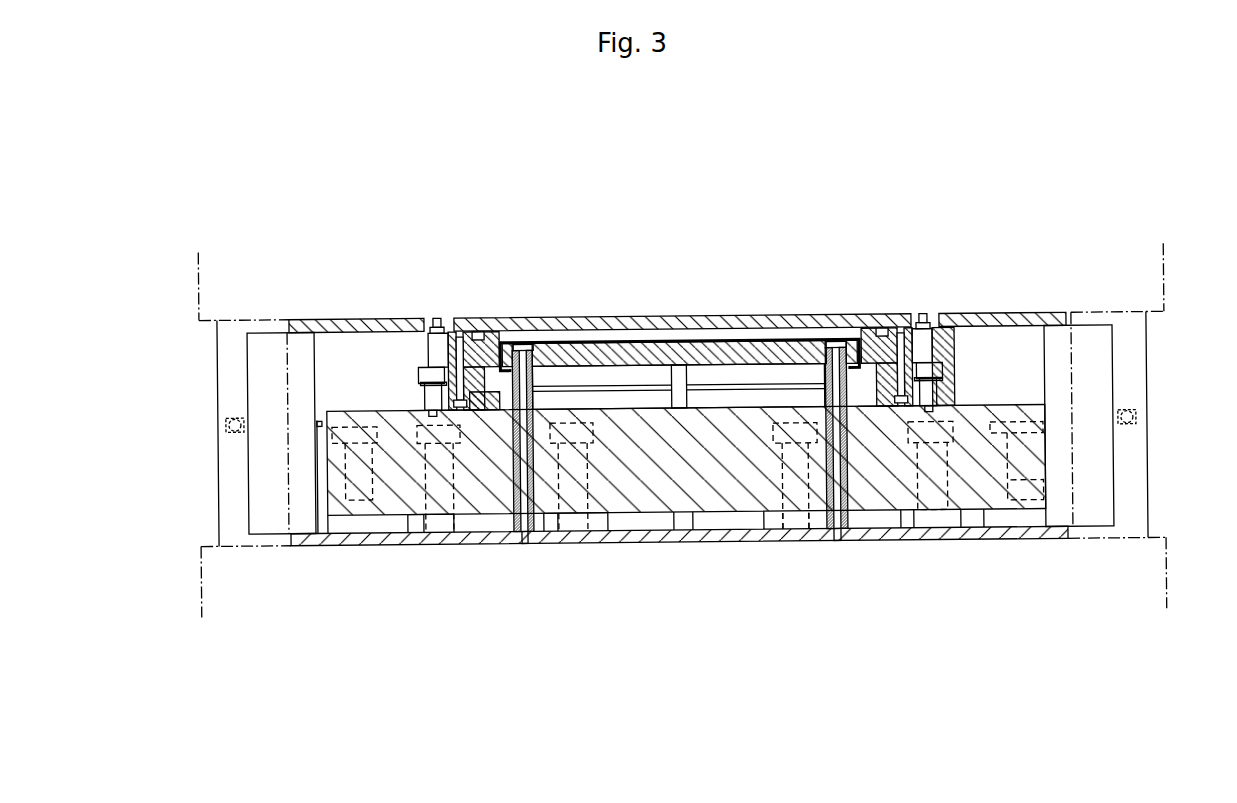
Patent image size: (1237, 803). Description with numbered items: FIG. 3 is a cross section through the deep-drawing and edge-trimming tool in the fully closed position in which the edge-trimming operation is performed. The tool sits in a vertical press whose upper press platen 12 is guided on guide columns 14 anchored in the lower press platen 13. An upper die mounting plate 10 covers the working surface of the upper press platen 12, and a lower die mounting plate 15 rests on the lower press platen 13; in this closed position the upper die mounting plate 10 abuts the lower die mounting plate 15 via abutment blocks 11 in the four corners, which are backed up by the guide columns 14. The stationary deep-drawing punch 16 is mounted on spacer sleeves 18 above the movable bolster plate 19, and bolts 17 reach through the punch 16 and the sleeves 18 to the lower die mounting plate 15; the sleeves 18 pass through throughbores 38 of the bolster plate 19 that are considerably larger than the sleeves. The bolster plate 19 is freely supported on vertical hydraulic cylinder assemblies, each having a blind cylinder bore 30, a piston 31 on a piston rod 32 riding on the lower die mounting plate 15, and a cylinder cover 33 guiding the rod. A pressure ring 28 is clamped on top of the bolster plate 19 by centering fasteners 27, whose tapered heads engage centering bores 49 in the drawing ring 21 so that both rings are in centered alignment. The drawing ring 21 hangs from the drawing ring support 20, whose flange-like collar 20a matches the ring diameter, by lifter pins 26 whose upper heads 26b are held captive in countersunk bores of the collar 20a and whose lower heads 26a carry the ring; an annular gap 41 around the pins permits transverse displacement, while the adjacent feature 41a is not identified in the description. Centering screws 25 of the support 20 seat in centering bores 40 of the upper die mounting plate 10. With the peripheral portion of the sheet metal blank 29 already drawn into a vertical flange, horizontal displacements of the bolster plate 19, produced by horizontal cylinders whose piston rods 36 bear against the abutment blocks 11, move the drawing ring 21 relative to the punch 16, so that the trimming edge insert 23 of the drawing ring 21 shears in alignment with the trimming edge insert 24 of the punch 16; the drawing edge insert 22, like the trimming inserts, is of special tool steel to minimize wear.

The upper die mounting plate 10 is at (1033, 320).
The abutment blocks 11 is at (268, 483).
The upper press platen 12 is at (240, 297).
The lower press platen 13 is at (240, 586).
The guide columns 14 is at (230, 352).
The lower die mounting plate 15 is at (907, 534).
The deep-drawing punch 16 is at (746, 366).
The bolts 17 is at (562, 342).
The spacer sleeves 18 is at (683, 393).
The bolster plate 19 is at (705, 465).
The drawing ring support 20 is at (615, 329).
The axial collar 20a is at (504, 341).
The drawing ring 21 is at (465, 364).
The drawing edge insert 22 is at (868, 402).
The trimming edge insert 23 is at (878, 339).
The trimming edge insert 24 is at (853, 340).
The centering screws 25 is at (928, 335).
The lifter pins 26 is at (466, 333).
The lower heads 26a is at (440, 409).
The upper heads 26b is at (453, 331).
The centering fasteners 27 is at (425, 382).
The pressure ring 28 is at (476, 405).
The sheet metal blank 29 is at (652, 340).
The blind cylinder bore 30 is at (580, 433).
The piston 31 is at (597, 467).
The piston rods 32 is at (572, 512).
The cylinder covers 33 is at (412, 526).
The piston rod 36 is at (322, 530).
The throughbores 38 is at (808, 516).
The centering bores 40 is at (436, 326).
The annular gap 41 is at (441, 333).
The nut 41a is at (440, 360).
The centering bores 49 is at (932, 367).